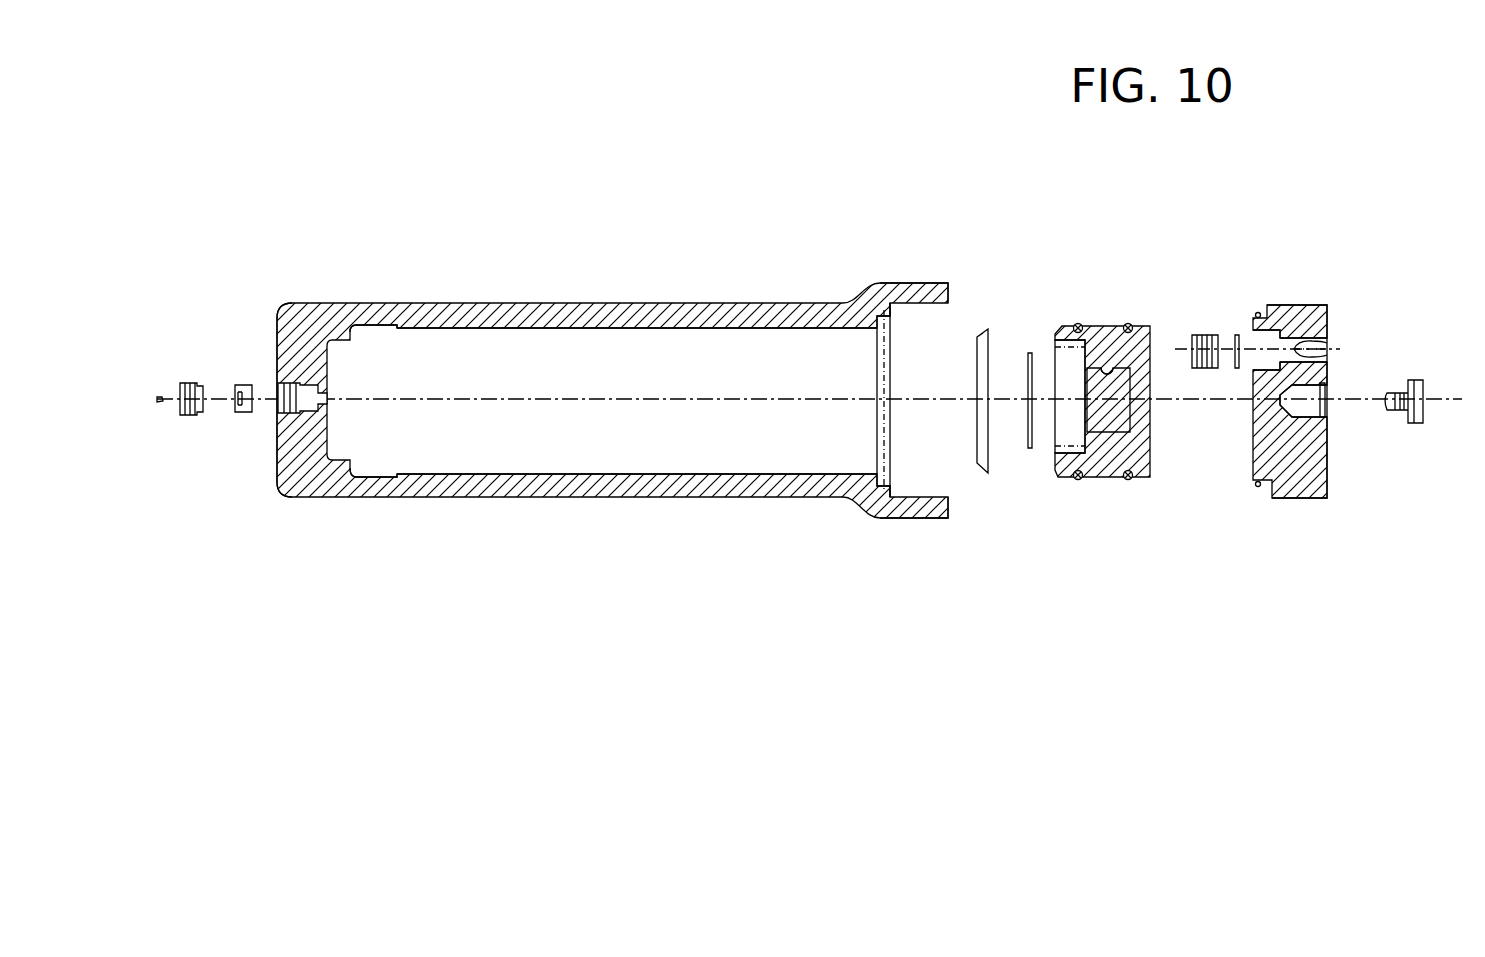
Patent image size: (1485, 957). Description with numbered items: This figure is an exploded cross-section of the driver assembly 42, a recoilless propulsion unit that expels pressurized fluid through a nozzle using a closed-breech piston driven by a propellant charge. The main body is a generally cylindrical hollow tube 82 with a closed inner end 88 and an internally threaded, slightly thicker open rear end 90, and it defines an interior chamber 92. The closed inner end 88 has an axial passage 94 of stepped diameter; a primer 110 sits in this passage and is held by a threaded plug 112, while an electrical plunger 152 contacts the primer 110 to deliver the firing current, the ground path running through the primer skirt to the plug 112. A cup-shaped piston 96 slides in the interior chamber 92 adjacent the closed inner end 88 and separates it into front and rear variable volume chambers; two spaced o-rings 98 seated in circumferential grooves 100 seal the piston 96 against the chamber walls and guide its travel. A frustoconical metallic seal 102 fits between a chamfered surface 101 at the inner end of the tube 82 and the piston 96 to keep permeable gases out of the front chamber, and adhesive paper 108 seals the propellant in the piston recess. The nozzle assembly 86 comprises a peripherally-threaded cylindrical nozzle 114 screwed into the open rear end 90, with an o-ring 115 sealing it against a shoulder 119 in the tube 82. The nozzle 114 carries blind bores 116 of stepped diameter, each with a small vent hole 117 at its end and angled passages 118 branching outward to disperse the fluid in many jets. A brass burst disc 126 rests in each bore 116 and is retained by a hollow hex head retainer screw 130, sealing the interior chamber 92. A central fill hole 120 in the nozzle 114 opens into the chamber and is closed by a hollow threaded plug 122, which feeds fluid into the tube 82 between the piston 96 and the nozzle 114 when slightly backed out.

The driver assembly 42 is at (887, 226).
The tube 82 is at (655, 482).
The nozzle assembly 86 is at (1298, 501).
The closed inner end 88 is at (283, 492).
The open rear end 90 is at (918, 520).
The interior chamber 92 is at (575, 348).
The axial passage 94 is at (330, 398).
The piston 96 is at (1136, 432).
The o-rings 98 is at (1076, 324).
The circumferential grooves 100 is at (1130, 325).
The chamfered surface 101 is at (402, 303).
The metallic seal 102 is at (985, 330).
The adhesive paper 108 is at (1028, 447).
The primer 110 is at (242, 385).
The threaded plug 112 is at (190, 383).
The nozzle 114 is at (1317, 476).
The o-ring 115 is at (1255, 488).
The blind bores 116 is at (1303, 318).
The vent hole 117 is at (1325, 350).
The angled passages 118 is at (1325, 340).
The shoulder 119 is at (888, 322).
The central fill hole 120 is at (1312, 410).
The threaded plug 122 is at (1424, 386).
The burst disc 126 is at (1240, 334).
The retainer screw 130 is at (1205, 332).
The electrical plunger 152 is at (160, 405).